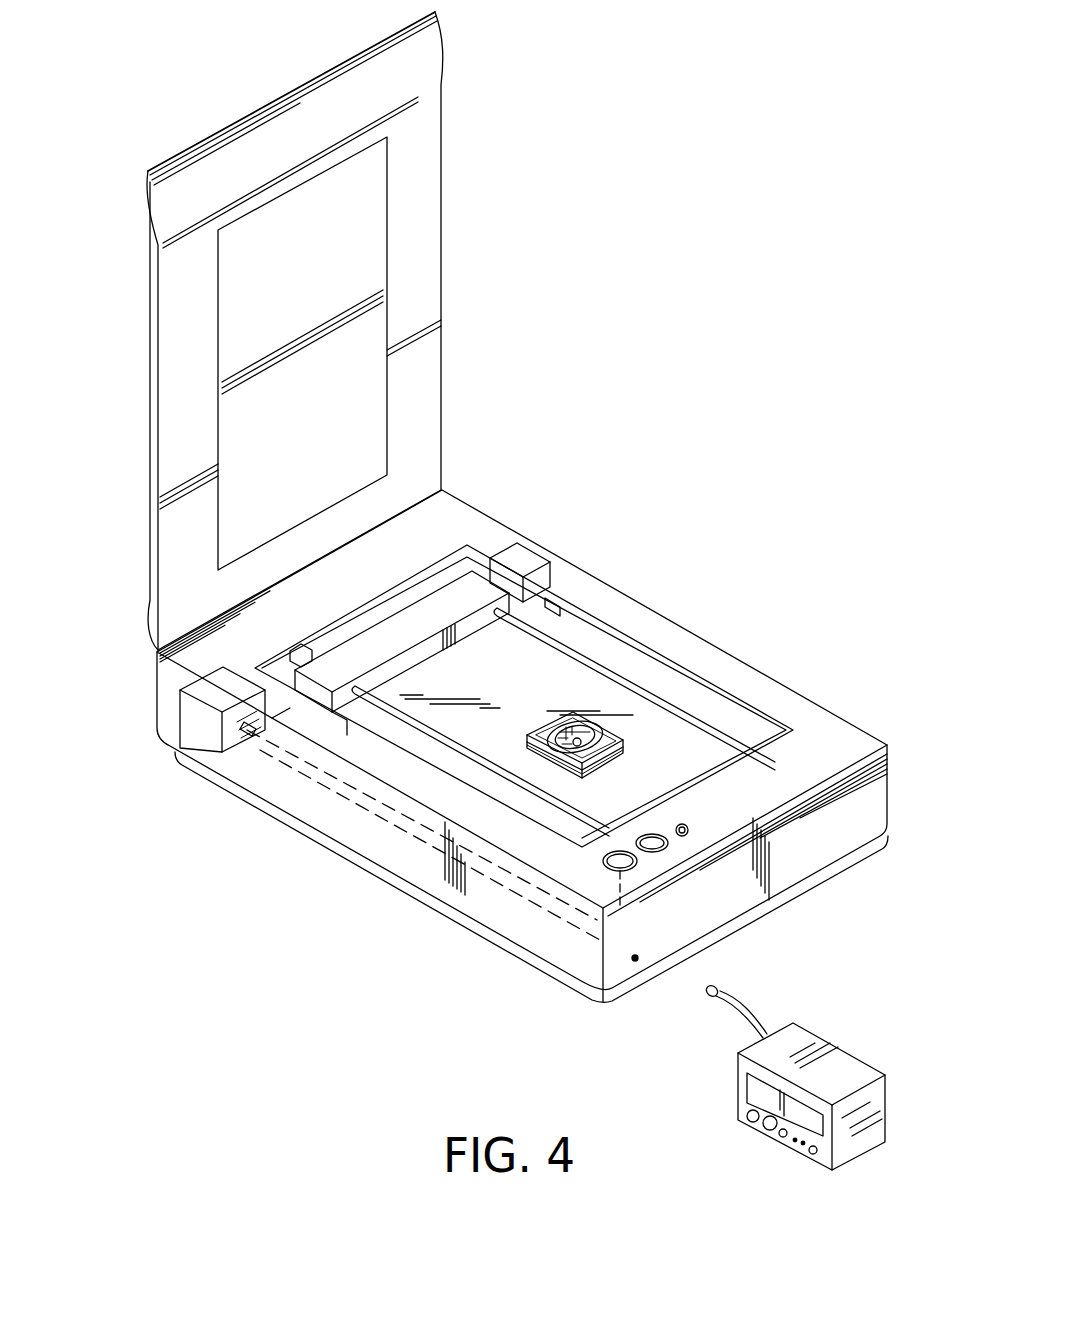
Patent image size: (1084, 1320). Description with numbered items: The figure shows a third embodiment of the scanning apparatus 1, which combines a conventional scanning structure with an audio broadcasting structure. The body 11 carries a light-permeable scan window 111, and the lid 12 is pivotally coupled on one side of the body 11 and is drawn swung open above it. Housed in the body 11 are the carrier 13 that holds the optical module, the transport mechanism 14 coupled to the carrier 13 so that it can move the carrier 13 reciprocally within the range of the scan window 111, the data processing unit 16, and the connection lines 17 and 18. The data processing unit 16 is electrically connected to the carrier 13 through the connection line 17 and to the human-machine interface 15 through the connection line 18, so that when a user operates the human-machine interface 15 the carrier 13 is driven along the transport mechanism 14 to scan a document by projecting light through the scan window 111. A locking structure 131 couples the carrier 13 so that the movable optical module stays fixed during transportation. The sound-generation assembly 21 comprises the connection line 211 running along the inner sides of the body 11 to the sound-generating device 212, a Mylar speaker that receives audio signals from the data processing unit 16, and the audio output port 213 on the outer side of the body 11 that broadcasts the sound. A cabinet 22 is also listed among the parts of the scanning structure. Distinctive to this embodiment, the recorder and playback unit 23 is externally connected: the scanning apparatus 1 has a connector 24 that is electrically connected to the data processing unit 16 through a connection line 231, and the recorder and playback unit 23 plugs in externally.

The scanning apparatus 1 is at (641, 338).
The body 11 is at (710, 661).
The scan window 111 is at (554, 618).
The lid 12 is at (414, 258).
The carrier 13 is at (467, 588).
The locking structure 131 is at (526, 565).
The transport mechanism 14 is at (602, 668).
The human-machine interface 15 is at (614, 862).
The data processing unit 16 is at (180, 730).
The connection line 17 is at (280, 727).
The connection line 18 is at (252, 726).
The sound generation assembly 21 is at (400, 921).
The connection line 211 is at (281, 766).
The sound-generating device 212 is at (581, 779).
The audio output port 213 is at (545, 760).
The cabinet 22 is at (686, 757).
The recorder and playback unit 23 is at (853, 1143).
The connection line 231 is at (290, 756).
The connector 24 is at (634, 960).